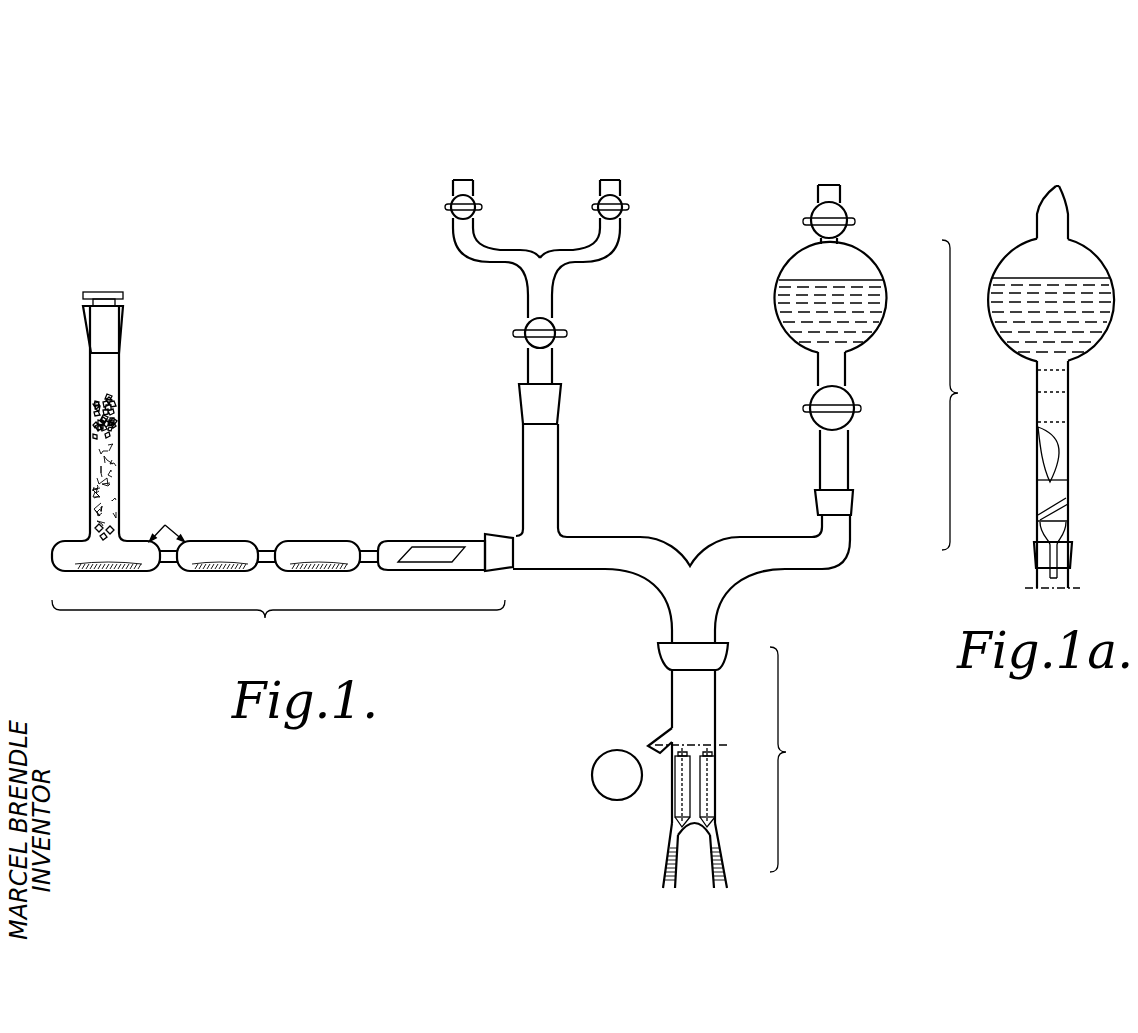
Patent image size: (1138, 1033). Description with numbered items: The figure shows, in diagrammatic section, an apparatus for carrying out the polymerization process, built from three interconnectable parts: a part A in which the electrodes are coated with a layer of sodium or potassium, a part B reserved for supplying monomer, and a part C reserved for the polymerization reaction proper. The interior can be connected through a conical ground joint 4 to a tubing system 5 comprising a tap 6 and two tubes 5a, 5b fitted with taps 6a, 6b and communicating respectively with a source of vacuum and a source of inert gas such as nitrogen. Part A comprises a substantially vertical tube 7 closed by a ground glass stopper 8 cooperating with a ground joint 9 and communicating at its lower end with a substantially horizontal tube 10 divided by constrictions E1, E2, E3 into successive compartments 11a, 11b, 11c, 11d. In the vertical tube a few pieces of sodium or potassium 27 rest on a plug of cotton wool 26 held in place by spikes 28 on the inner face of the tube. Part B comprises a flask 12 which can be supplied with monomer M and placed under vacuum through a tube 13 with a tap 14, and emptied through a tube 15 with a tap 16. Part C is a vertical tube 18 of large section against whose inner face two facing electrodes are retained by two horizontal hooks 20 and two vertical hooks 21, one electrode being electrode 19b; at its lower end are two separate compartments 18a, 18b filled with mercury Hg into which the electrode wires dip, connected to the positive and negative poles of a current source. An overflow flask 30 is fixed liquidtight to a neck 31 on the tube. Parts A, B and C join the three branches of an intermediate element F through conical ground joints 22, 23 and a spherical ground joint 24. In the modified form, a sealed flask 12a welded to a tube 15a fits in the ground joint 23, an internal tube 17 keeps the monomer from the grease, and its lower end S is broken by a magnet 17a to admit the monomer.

In FIG. 1, the conical ground joint 4 is at (559, 396).
In FIG. 1, the tubing system 5 is at (552, 288).
In FIG. 1, the tube 5a is at (474, 257).
In FIG. 1, the tube 5b is at (606, 250).
In FIG. 1, the tap 6 is at (547, 326).
In FIG. 1, the tap 6a is at (478, 205).
In FIG. 1, the tap 6b is at (620, 204).
In FIG. 1, the vertical tube 7 is at (121, 456).
In FIG. 1, the ground glass stopper 8 is at (110, 323).
In FIG. 1, the ground joint 9 is at (90, 324).
In FIG. 1, the horizontal tube 10 is at (167, 522).
In FIG. 1, the compartment 11a is at (106, 572).
In FIG. 1, the compartment 11b is at (217, 572).
In FIG. 1, the compartment 11c is at (317, 572).
In FIG. 1, the compartment 11d is at (431, 572).
In FIG. 1, the flask 12 is at (885, 317).
In FIG. 1A, the sealed flask 12a is at (1002, 258).
In FIG. 1, the tube 13 is at (842, 193).
In FIG. 1, the tap 14 is at (848, 223).
In FIG. 1, the tube 15 is at (847, 378).
In FIG. 1A, the tube 15a is at (1040, 480).
In FIG. 1, the tap 16 is at (857, 408).
In FIG. 1A, the internal tube 17 is at (1040, 547).
In FIG. 1A, the magnet 17a is at (1040, 513).
In FIG. 1, the vertical tube 18 is at (715, 700).
In FIG. 1, the compartment 18a is at (664, 875).
In FIG. 1, the compartment 18b is at (733, 881).
In FIG. 1, the electrode 19b is at (710, 784).
In FIG. 1, the horizontal hooks 20 is at (668, 773).
In FIG. 1, the vertical hooks 21 is at (674, 826).
In FIG. 1, the conical ground joint 22 is at (500, 534).
In FIG. 1, the conical ground joint 23 is at (852, 507).
In FIG. 1A, the conical ground joint 23 is at (1040, 563).
In FIG. 1, the spherical ground joint 24 is at (657, 656).
In FIG. 1, the plug of cotton wool 26 is at (92, 476).
In FIG. 1, the pieces of sodium or potassium 27 is at (123, 405).
In FIG. 1, the spikes 28 is at (94, 521).
In FIG. 1, the flask 30 is at (597, 792).
In FIG. 1, the neck 31 is at (670, 730).
In FIG. 1, the part A is at (278, 620).
In FIG. 1, the part B is at (962, 395).
In FIG. 1, the part C is at (788, 759).
In FIG. 1, the intermediate element F is at (743, 590).
In FIG. 1, the monomer M is at (830, 302).
In FIG. 1A, the monomer M is at (1047, 307).
In FIG. 1A, the lower end S is at (1047, 473).
In FIG. 1, the mercury Hg is at (695, 865).
In FIG. 1, the constriction E1 is at (164, 579).
In FIG. 1, the constriction E2 is at (271, 579).
In FIG. 1, the constriction E3 is at (374, 579).